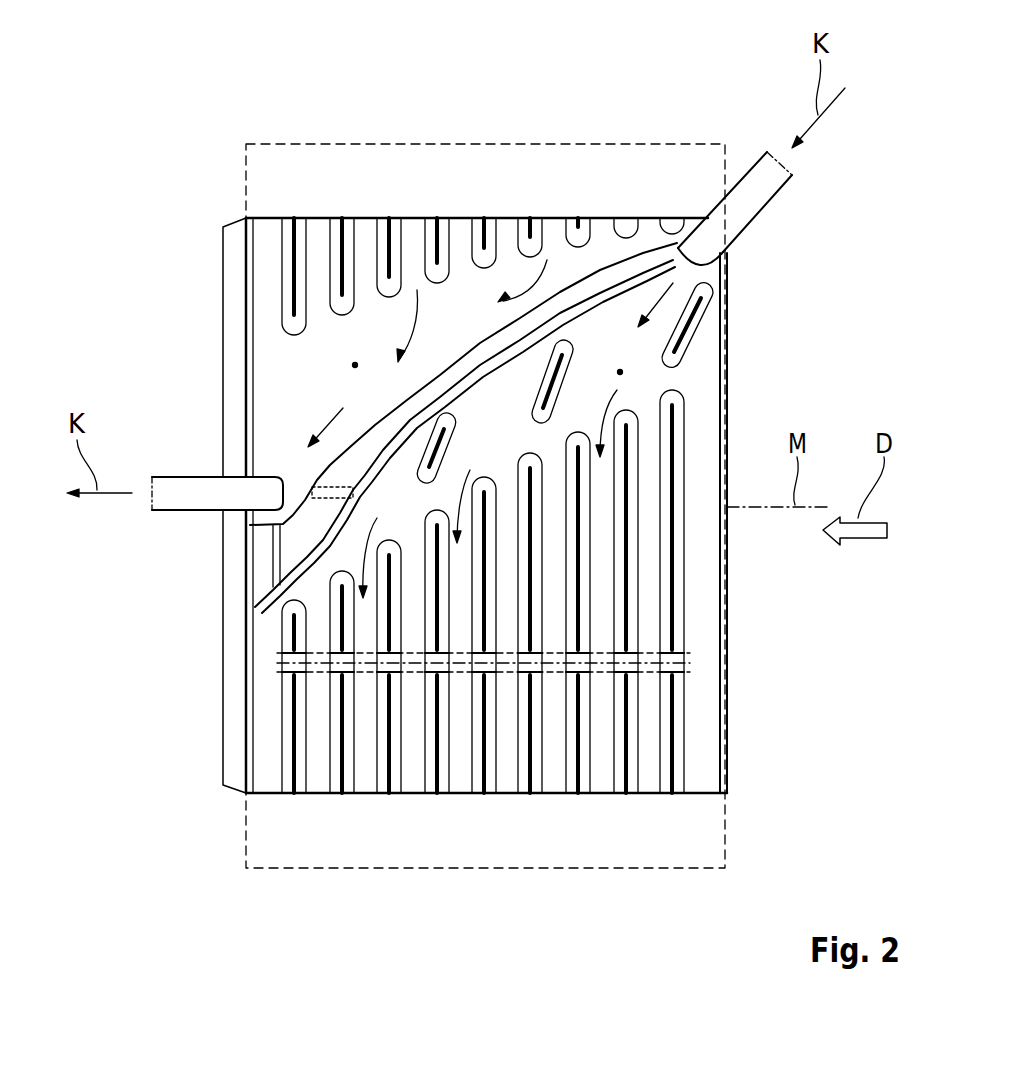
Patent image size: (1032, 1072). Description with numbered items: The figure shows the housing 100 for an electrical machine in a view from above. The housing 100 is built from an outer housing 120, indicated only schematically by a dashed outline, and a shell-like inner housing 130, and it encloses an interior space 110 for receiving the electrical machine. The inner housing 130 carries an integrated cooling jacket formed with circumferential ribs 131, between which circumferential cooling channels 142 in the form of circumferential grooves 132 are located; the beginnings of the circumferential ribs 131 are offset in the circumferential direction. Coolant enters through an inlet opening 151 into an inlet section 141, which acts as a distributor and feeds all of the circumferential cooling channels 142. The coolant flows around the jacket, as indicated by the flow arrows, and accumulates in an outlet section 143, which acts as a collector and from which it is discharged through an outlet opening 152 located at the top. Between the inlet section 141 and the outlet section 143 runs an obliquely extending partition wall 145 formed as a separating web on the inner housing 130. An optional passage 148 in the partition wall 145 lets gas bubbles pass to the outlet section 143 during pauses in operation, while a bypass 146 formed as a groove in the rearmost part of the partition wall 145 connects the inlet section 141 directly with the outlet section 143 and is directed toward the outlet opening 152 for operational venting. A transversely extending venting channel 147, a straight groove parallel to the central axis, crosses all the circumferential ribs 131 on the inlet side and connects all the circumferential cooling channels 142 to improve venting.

The housing 100 is at (155, 150).
The interior space 110 is at (727, 552).
The outer housing 120 is at (380, 845).
The inner housing 130 is at (727, 603).
The circumferential ribs 131 is at (342, 240).
The circumferential grooves 132 is at (365, 240).
The inlet section 141 is at (620, 372).
The circumferential cooling channels 142 is at (412, 240).
The outlet section 143 is at (355, 365).
The partition wall 145 is at (598, 285).
The bypass 146 is at (265, 567).
The venting channel 147 is at (700, 667).
The passage 148 is at (322, 495).
The inlet opening 151 is at (737, 218).
The outlet opening 152 is at (163, 508).